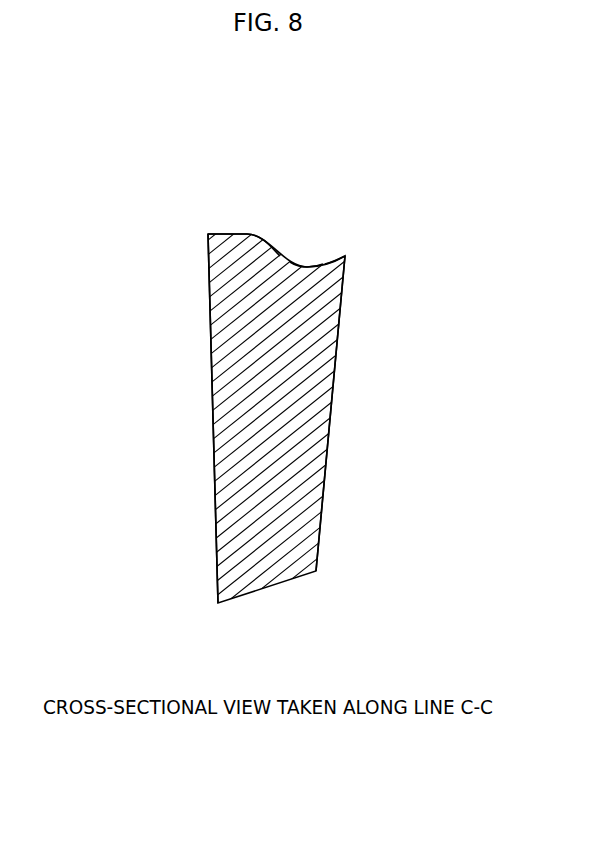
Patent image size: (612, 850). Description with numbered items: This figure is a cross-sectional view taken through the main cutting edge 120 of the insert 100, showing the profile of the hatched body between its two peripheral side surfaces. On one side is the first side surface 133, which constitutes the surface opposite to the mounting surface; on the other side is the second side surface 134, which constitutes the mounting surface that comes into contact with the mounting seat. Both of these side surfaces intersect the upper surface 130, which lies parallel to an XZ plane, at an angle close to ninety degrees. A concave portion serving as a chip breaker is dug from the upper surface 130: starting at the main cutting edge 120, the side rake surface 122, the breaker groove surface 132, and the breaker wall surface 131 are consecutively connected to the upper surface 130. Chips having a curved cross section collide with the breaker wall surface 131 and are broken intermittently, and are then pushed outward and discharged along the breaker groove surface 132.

The knife 100 is at (77, 109).
The main cutting edge 120 is at (348, 256).
The side rake surface 122 is at (341, 255).
The upper surface 130 is at (223, 233).
The breaker wall surface 131 is at (277, 250).
The breaker groove surface 132 is at (307, 265).
The first side surface 133 is at (335, 375).
The second side surface 134 is at (212, 368).